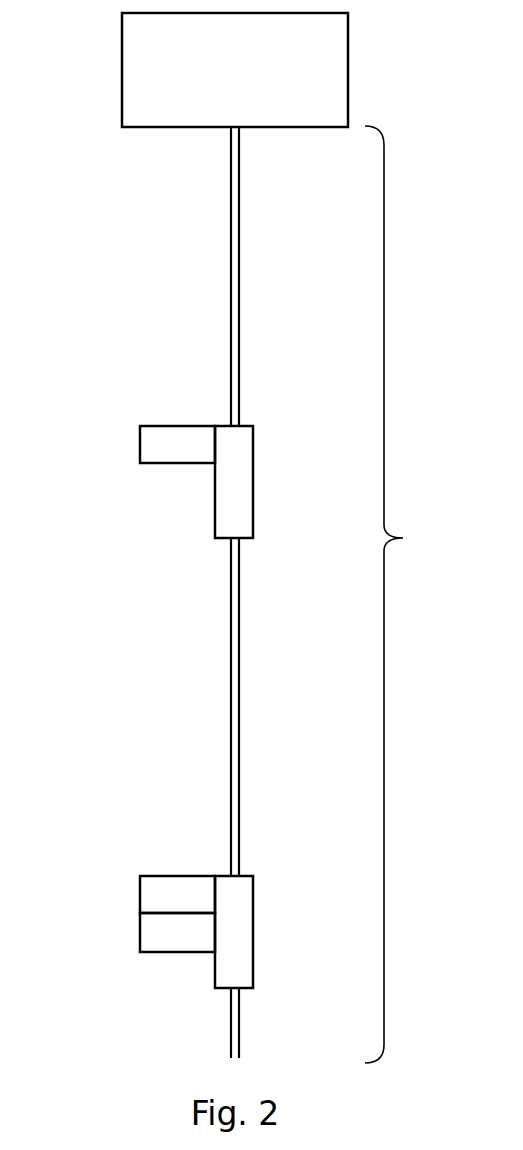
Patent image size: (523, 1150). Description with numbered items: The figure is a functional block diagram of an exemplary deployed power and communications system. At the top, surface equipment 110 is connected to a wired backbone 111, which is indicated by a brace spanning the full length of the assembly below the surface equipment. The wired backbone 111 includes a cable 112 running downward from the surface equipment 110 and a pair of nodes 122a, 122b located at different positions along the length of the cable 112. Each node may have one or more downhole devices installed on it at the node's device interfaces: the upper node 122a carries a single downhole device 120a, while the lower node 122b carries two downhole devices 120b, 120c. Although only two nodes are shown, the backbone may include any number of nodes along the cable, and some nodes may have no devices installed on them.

The surface equipment 110 is at (214, 81).
The wired backbone 111 is at (406, 594).
The cable 112 is at (230, 201).
The downhole device 120a is at (140, 439).
The downhole device 120b is at (140, 886).
The downhole device 120c is at (140, 934).
The node 122a is at (254, 477).
The node 122b is at (254, 927).